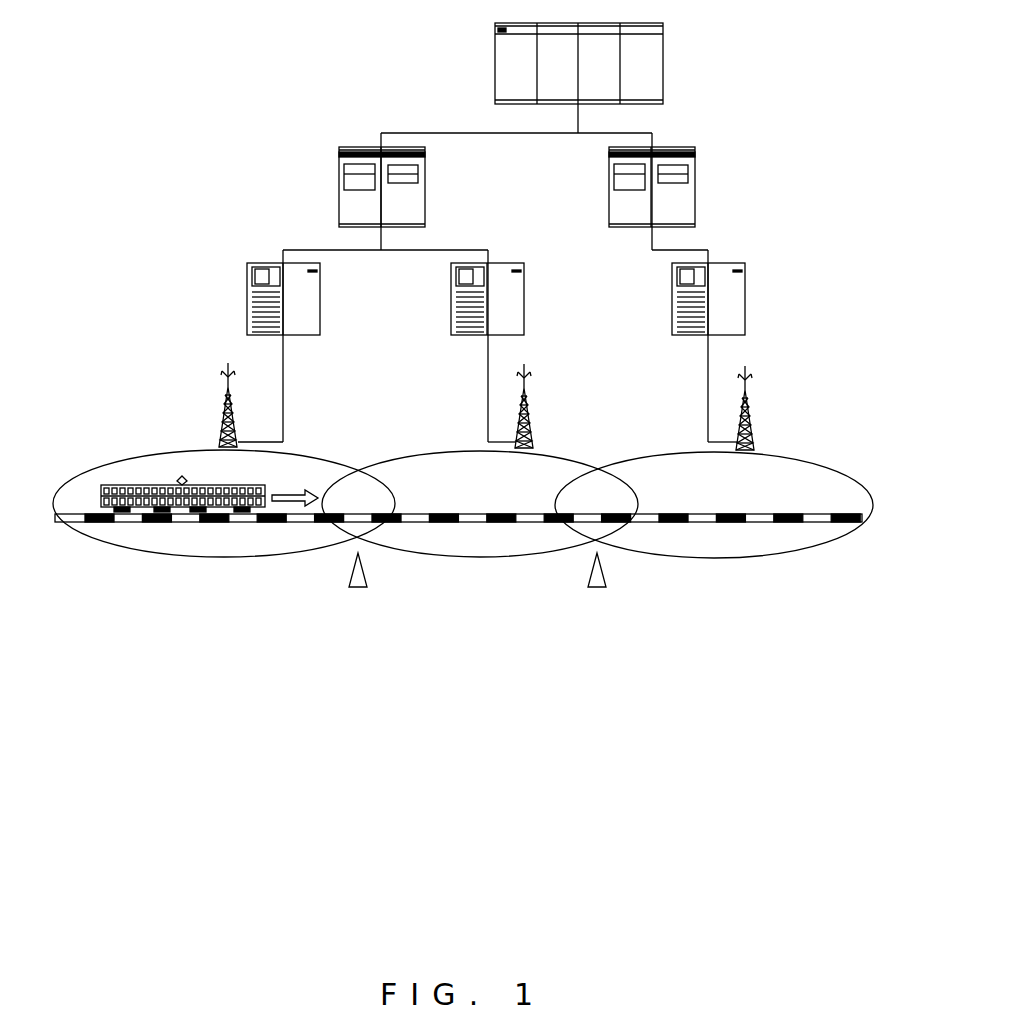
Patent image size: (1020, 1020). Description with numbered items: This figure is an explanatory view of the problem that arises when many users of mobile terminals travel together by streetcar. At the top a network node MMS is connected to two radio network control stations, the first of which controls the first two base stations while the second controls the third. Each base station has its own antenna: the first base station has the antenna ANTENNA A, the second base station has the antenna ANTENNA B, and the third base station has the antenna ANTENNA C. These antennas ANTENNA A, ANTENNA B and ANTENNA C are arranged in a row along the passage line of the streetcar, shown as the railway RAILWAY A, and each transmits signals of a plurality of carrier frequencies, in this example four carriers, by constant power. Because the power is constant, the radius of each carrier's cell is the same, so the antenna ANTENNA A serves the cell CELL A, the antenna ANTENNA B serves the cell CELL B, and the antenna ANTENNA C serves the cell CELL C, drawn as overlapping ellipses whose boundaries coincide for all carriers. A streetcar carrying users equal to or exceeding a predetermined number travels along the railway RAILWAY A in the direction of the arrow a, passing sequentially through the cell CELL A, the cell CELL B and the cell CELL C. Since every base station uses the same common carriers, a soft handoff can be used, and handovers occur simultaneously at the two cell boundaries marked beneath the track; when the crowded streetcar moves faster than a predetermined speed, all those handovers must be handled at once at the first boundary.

The multimedia message service server MMS is at (607, 63).
The antenna A ANTENNA A is at (177, 405).
The antenna B ANTENNA B is at (581, 406).
The antenna C ANTENNA C is at (803, 408).
The cell of antenna A CELL A is at (224, 490).
The cell of antenna B CELL B is at (480, 490).
The cell of antenna C CELL C is at (714, 491).
The passage line of streetcar RAILWAY A is at (138, 466).
The arrow indicating streetcar travel direction a is at (284, 493).